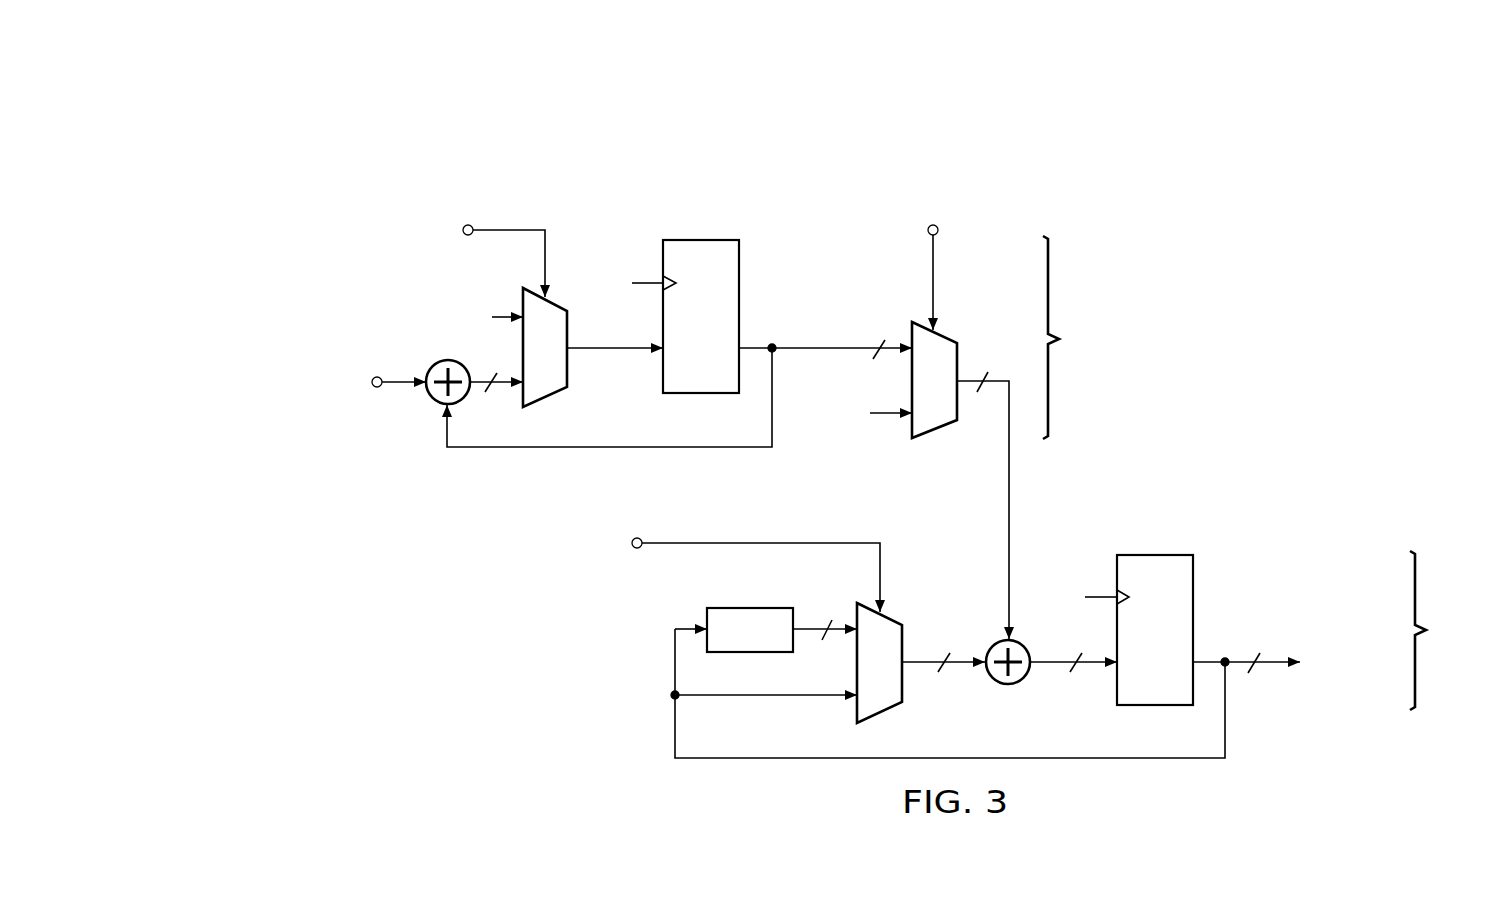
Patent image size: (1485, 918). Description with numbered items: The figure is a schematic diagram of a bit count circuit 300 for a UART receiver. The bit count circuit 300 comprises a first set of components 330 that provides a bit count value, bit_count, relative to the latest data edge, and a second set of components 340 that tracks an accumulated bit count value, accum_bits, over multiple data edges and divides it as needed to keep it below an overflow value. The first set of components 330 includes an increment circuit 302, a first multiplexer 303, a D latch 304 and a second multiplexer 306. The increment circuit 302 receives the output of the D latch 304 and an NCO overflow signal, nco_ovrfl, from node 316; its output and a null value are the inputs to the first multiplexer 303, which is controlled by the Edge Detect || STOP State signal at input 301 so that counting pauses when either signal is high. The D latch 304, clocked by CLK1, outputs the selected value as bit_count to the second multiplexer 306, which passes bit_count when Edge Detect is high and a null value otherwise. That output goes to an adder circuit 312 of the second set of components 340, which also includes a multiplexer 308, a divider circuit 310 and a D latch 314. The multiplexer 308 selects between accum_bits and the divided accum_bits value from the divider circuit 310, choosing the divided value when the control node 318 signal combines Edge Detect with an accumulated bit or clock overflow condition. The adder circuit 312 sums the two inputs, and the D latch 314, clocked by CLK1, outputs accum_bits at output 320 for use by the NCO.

The bit count circuit 300 is at (1212, 170).
The reset input (EDGE DETECT || STOP STATE) 301 is at (466, 224).
The increment circuit 302 is at (433, 367).
The first multiplexer 303 is at (568, 363).
The D latch 304 is at (739, 299).
The second multiplexer 306 is at (958, 360).
The multiplexer 308 is at (903, 683).
The divider circuit 310 is at (750, 608).
The adder circuit 312 is at (1026, 680).
The D latch 314 is at (1153, 553).
The node 316 is at (375, 388).
The control node 318 is at (640, 538).
The accum_bits output 320 is at (1268, 667).
The first set of components 330 is at (1074, 337).
The second set of components 340 is at (1441, 630).